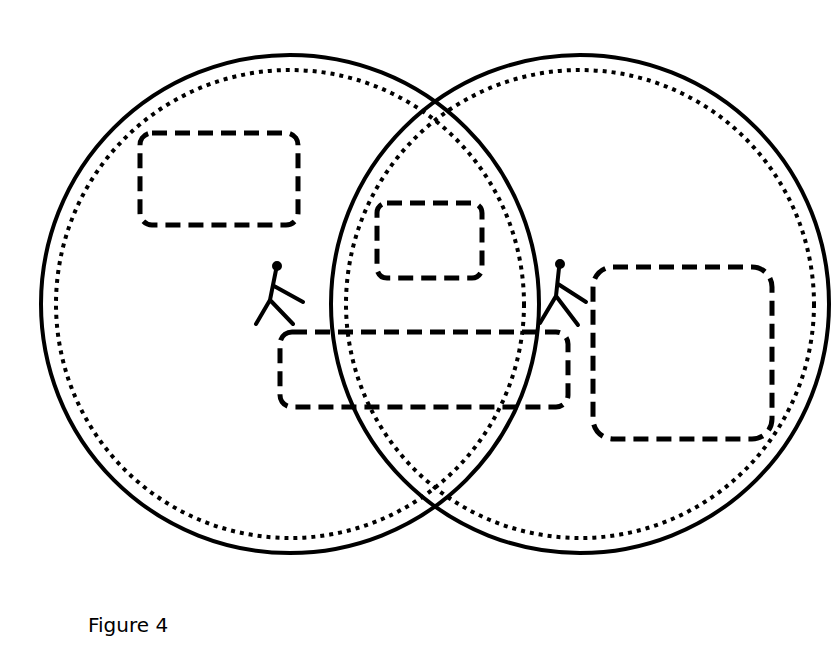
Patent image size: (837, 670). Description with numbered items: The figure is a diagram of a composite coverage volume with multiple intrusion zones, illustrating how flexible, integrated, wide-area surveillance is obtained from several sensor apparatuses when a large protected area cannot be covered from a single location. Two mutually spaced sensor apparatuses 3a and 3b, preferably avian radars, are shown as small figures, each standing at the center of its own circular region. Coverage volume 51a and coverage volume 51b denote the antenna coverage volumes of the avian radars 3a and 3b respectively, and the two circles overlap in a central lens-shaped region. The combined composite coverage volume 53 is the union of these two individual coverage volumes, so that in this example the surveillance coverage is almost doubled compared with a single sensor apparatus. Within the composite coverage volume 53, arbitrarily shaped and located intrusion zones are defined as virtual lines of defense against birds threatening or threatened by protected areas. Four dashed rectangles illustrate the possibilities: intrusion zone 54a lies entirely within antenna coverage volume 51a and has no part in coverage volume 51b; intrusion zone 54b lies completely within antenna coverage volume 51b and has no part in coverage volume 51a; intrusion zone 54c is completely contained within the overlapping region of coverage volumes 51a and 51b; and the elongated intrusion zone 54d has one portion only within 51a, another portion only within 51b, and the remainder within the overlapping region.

The composite coverage volume 53 is at (633, 62).
The coverage volume 51a is at (62, 294).
The coverage volume 51b is at (677, 96).
The intrusion zone 54a is at (233, 127).
The intrusion zone 54b is at (713, 262).
The intrusion zone 54c is at (453, 203).
The intrusion zone 54d is at (280, 378).
The sensor apparatus 3a is at (265, 277).
The sensor apparatus 3b is at (563, 262).